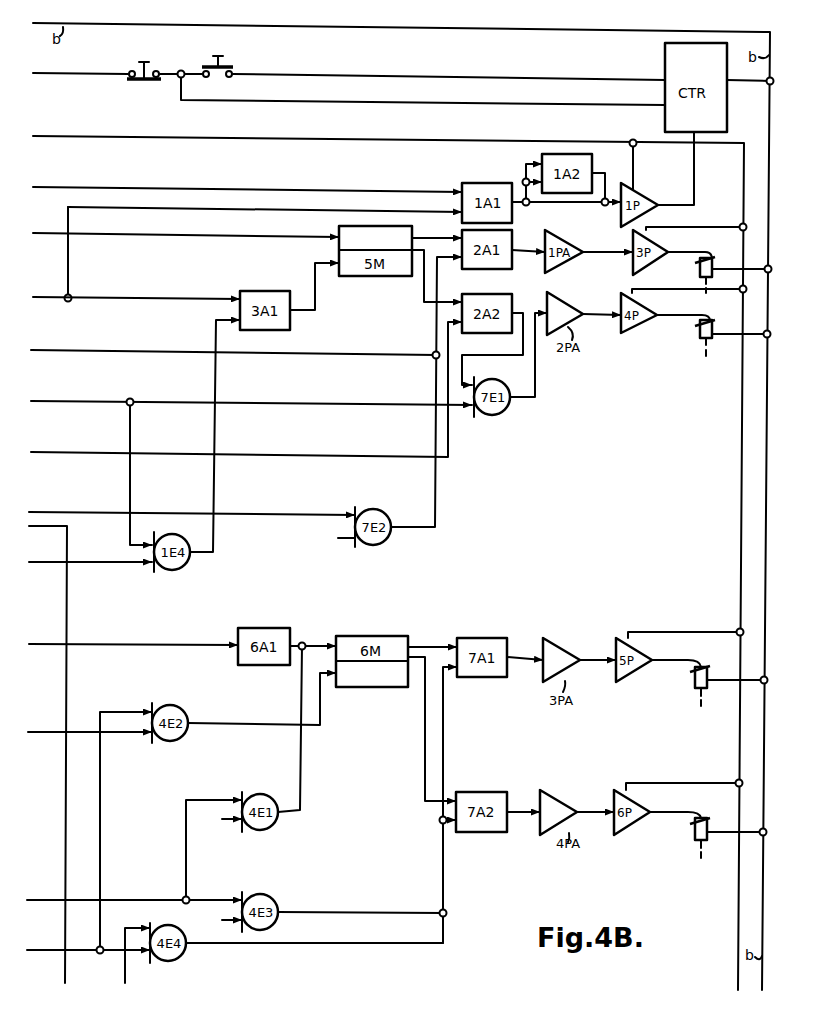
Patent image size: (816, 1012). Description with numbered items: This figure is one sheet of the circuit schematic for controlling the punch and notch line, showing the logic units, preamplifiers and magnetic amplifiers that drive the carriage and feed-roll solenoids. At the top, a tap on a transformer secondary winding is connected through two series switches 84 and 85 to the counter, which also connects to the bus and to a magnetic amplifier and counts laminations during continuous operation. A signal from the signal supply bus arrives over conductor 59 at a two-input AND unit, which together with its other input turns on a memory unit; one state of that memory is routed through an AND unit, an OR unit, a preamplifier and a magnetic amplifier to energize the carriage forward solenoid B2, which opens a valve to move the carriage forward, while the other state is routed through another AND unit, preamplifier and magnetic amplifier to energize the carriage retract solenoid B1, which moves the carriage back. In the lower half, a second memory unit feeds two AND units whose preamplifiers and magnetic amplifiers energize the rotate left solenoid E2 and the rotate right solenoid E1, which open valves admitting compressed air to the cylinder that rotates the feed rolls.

The switch 84 is at (144, 81).
The switch 85 is at (230, 67).
The conductor 59 is at (39, 296).
The carriage retract solenoid B1 is at (704, 257).
The carriage forward solenoid B2 is at (697, 330).
The rotate right solenoid E1 is at (705, 818).
The rotate left solenoid E2 is at (705, 665).